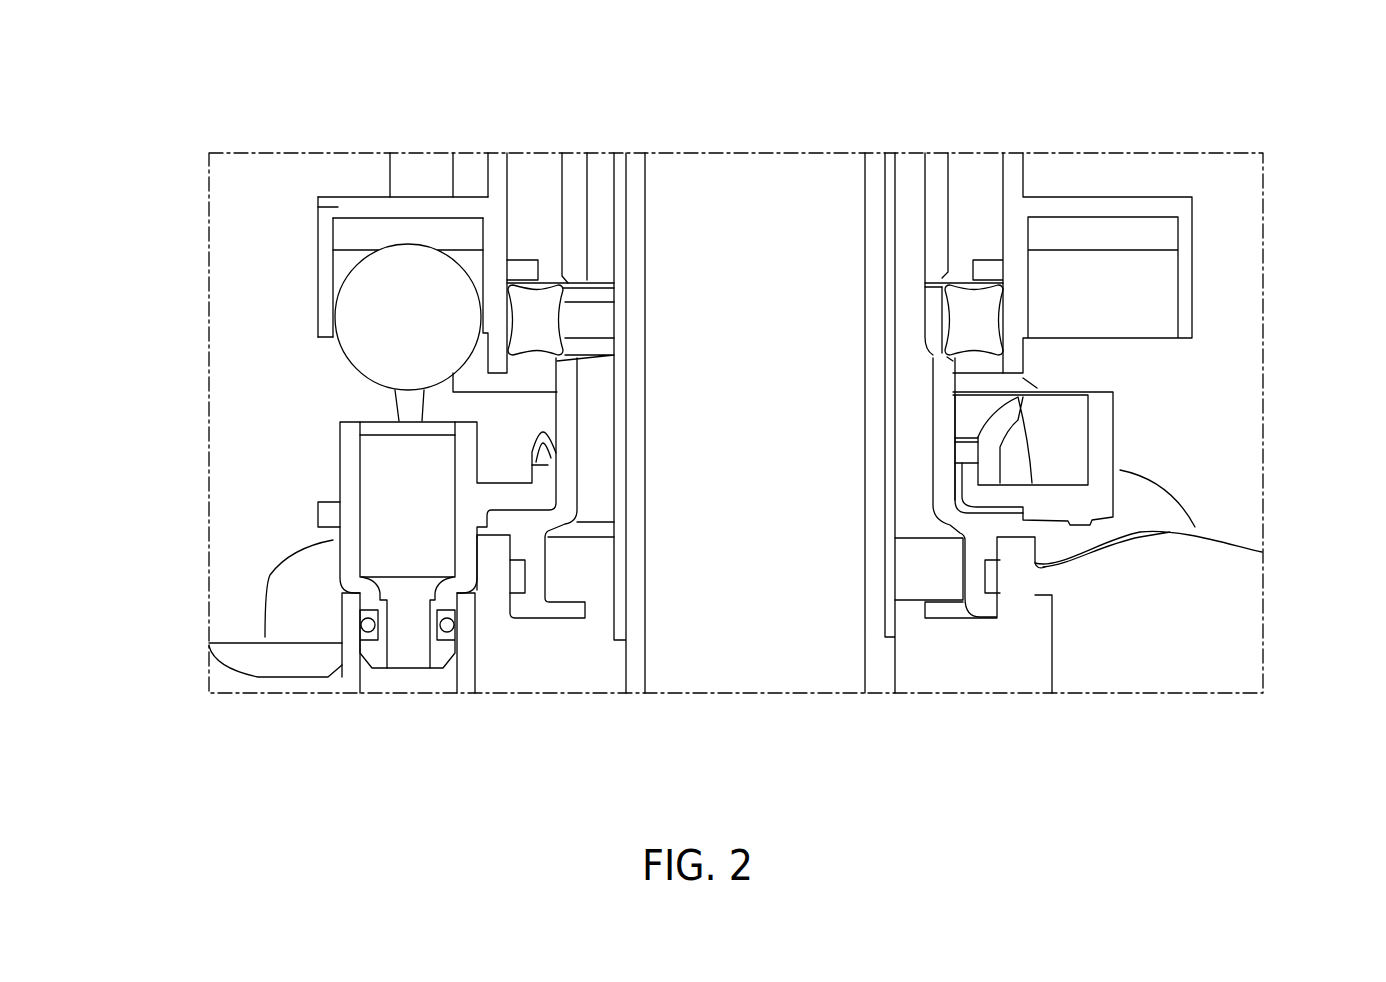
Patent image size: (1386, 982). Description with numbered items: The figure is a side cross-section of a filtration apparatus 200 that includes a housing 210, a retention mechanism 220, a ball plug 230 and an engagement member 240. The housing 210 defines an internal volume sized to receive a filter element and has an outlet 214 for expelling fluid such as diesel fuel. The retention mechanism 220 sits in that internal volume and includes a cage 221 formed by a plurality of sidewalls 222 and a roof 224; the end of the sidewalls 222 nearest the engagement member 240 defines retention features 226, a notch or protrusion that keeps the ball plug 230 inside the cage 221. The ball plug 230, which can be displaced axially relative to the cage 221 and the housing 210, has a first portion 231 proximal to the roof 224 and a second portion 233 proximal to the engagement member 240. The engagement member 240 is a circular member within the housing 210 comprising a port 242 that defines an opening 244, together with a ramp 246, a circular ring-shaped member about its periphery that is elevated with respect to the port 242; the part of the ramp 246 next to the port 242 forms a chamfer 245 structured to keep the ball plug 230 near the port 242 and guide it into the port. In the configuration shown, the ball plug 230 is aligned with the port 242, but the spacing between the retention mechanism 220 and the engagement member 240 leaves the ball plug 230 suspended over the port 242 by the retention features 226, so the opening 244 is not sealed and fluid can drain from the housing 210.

The filtration apparatus 200 is at (383, 108).
The housing 210 is at (1224, 264).
The outlet 214 is at (397, 684).
The retention mechanism 220 is at (418, 152).
The cage 221 is at (316, 174).
The sidewalls 222 is at (325, 260).
The roof 224 is at (338, 207).
The retention features 226 is at (313, 333).
The ball plug 230 is at (400, 312).
The first portion 231 is at (409, 250).
The second portion 233 is at (382, 377).
The engagement member 240 is at (492, 588).
The port 242 is at (463, 578).
The opening 244 is at (388, 432).
The chamfer 245 is at (410, 407).
The ramp 246 is at (1107, 417).